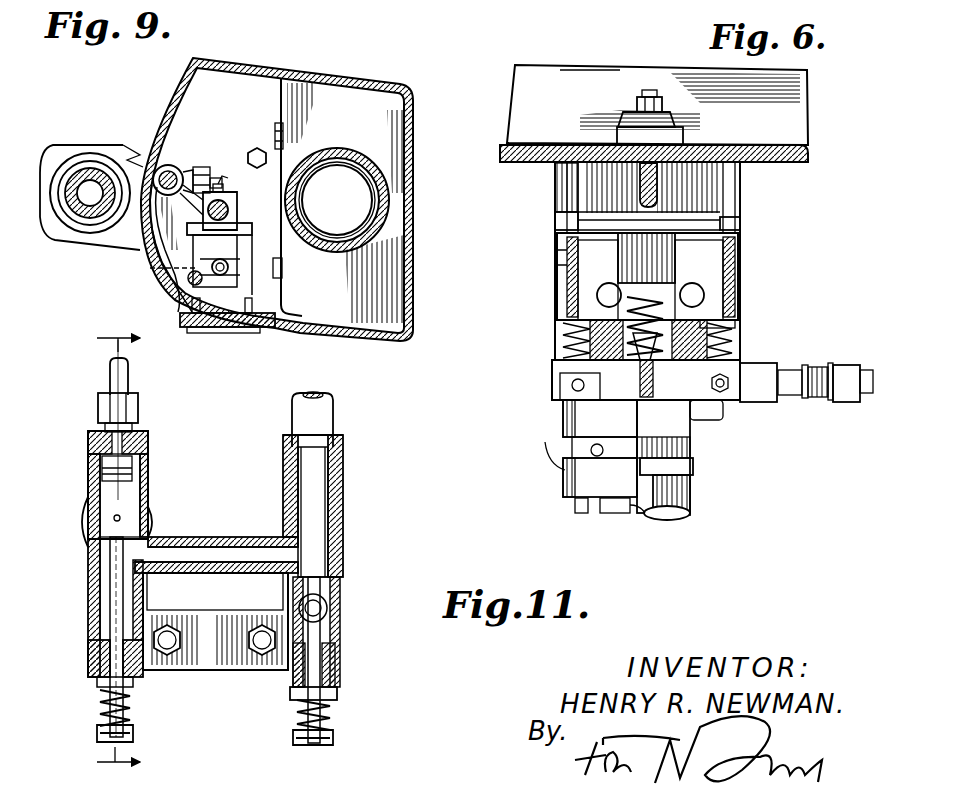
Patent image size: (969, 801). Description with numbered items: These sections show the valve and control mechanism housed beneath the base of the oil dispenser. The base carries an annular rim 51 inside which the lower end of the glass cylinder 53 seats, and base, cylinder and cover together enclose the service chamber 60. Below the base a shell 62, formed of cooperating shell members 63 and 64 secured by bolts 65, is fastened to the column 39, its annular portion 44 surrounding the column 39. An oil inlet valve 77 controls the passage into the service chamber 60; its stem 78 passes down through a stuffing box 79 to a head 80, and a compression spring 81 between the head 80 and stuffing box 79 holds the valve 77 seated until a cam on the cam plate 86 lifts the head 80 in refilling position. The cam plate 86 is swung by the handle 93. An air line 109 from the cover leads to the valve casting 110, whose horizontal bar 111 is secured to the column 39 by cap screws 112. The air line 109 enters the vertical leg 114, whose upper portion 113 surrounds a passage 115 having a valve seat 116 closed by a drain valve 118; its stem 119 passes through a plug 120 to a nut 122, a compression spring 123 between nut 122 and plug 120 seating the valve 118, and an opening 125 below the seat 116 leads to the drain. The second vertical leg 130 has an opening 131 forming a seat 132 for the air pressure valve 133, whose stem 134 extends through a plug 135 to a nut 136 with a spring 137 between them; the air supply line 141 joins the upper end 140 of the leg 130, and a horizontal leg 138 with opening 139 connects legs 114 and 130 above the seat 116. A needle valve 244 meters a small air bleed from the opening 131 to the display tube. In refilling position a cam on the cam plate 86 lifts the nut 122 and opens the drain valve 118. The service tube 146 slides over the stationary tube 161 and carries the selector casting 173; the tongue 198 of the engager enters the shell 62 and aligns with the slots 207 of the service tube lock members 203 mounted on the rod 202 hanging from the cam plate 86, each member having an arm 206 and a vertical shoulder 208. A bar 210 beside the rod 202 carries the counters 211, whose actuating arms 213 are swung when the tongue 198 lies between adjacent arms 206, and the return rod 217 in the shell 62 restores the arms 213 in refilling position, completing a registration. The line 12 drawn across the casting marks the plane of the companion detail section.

In FIG. 11, the section line 12 is at (105, 552).
In FIG. 9, the column 39 is at (325, 258).
In FIG. 6, the column 39 is at (690, 499).
In FIG. 9, the ring 44 is at (382, 167).
In FIG. 6, the rim 51 is at (557, 143).
In FIG. 6, the glass cylinder 53 is at (597, 78).
In FIG. 6, the service chamber 60 is at (606, 107).
In FIG. 9, the shell 62 is at (363, 84).
In FIG. 9, the shell member 63 is at (390, 290).
In FIG. 9, the shell member 64 is at (380, 120).
In FIG. 9, the bolts 65 is at (280, 138).
In FIG. 6, the oil inlet valve 77 is at (677, 143).
In FIG. 6, the stem 78 is at (655, 95).
In FIG. 6, the stuffing box 79 is at (633, 253).
In FIG. 6, the head 80 is at (740, 310).
In FIG. 6, the compression spring 81 is at (667, 317).
In FIG. 6, the cam plate 86 is at (562, 372).
In FIG. 6, the handle 93 is at (847, 395).
In FIG. 11, the air line 109 is at (330, 413).
In FIG. 11, the valve casting 110 is at (185, 537).
In FIG. 6, the horizontal bar 111 is at (703, 287).
In FIG. 11, the horizontal bar 111 is at (223, 663).
In FIG. 6, the cap screws 112 is at (567, 330).
In FIG. 11, the cap screws 112 is at (260, 637).
In FIG. 6, the cylinder 113 is at (740, 250).
In FIG. 11, the cylinder 113 is at (342, 452).
In FIG. 11, the vertical leg 114 is at (342, 490).
In FIG. 11, the passage 115 is at (320, 553).
In FIG. 11, the valve seat 116 is at (333, 586).
In FIG. 6, the drain valve 118 is at (723, 337).
In FIG. 11, the drain valve 118 is at (330, 630).
In FIG. 11, the stem 119 is at (333, 664).
In FIG. 11, the plug 120 is at (290, 690).
In FIG. 11, the nut 122 is at (323, 736).
In FIG. 11, the compression spring 123 is at (323, 708).
In FIG. 11, the opening 125 is at (333, 610).
In FIG. 11, the vertical leg 130 is at (92, 570).
In FIG. 11, the opening 131 is at (103, 598).
In FIG. 11, the seat 132 is at (143, 527).
In FIG. 6, the air pressure valve 133 is at (570, 335).
In FIG. 11, the air pressure valve 133 is at (108, 574).
In FIG. 11, the stem 134 is at (117, 622).
In FIG. 11, the plug 135 is at (130, 683).
In FIG. 11, the nut 136 is at (133, 737).
In FIG. 11, the compression spring 137 is at (103, 705).
In FIG. 6, the horizontal leg 138 is at (556, 216).
In FIG. 11, the horizontal leg 138 is at (213, 550).
In FIG. 11, the opening 139 is at (215, 555).
In FIG. 6, the head 140 is at (555, 257).
In FIG. 11, the head 140 is at (88, 448).
In FIG. 11, the air supply line 141 is at (128, 384).
In FIG. 9, the service tube 146 is at (77, 175).
In FIG. 9, the stationary tube 161 is at (93, 175).
In FIG. 9, the casting 173 is at (62, 237).
In FIG. 6, the tongue 198 is at (727, 335).
In FIG. 9, the rod 202 is at (173, 163).
In FIG. 6, the rod 202 is at (577, 507).
In FIG. 9, the service tube lock members 203 is at (168, 270).
In FIG. 6, the service tube lock members 203 is at (567, 420).
In FIG. 6, the arm 206 is at (703, 413).
In FIG. 9, the vertical slot 207 is at (190, 277).
In FIG. 6, the vertical slot 207 is at (643, 403).
In FIG. 6, the vertical shoulder 208 is at (650, 517).
In FIG. 9, the bar 210 is at (217, 200).
In FIG. 6, the bar 210 is at (623, 513).
In FIG. 9, the counters 211 is at (257, 300).
In FIG. 6, the counters 211 is at (693, 450).
In FIG. 9, the actuating arms 213 is at (216, 276).
In FIG. 9, the return rod 217 is at (197, 286).
In FIG. 11, the needle valve 244 is at (82, 521).